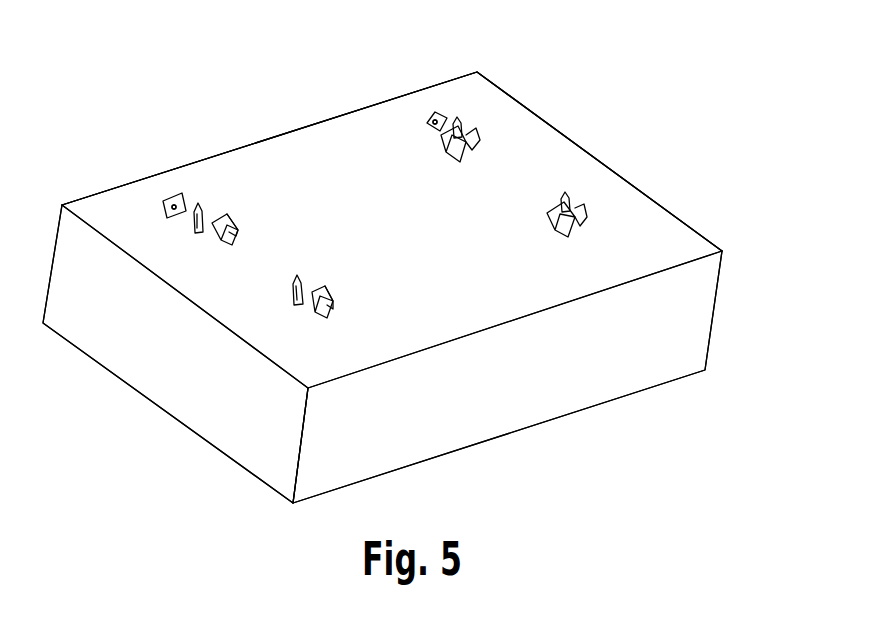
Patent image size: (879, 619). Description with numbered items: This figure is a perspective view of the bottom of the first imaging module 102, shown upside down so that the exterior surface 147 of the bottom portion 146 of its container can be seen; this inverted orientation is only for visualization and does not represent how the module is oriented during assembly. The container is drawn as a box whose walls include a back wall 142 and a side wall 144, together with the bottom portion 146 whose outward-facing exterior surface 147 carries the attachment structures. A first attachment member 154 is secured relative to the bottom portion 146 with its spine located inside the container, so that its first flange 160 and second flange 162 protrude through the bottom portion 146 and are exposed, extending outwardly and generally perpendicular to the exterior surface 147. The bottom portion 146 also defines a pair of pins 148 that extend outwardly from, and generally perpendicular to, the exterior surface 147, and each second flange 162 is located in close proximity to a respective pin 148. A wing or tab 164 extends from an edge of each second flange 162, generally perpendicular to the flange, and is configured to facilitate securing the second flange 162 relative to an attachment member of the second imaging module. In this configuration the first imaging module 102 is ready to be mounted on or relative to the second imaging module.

The first imaging module 102 is at (286, 124).
The back wall 142 is at (541, 384).
The side wall 144 is at (198, 371).
The bottom portion 146 is at (338, 170).
The exterior surface 147 is at (421, 249).
The pin 148 is at (192, 222).
The first attachment member 154 is at (179, 180).
The first flange 160 is at (163, 212).
The second flange 162 is at (216, 216).
The tab 164 is at (237, 231).